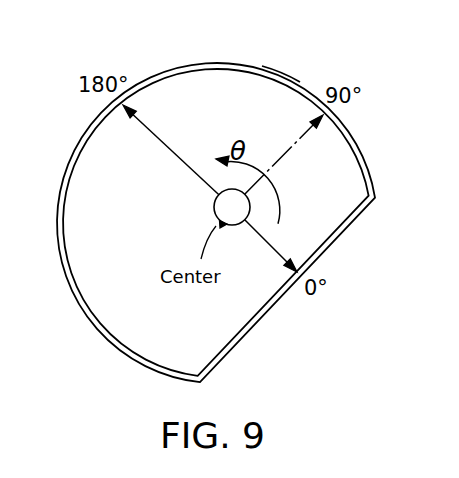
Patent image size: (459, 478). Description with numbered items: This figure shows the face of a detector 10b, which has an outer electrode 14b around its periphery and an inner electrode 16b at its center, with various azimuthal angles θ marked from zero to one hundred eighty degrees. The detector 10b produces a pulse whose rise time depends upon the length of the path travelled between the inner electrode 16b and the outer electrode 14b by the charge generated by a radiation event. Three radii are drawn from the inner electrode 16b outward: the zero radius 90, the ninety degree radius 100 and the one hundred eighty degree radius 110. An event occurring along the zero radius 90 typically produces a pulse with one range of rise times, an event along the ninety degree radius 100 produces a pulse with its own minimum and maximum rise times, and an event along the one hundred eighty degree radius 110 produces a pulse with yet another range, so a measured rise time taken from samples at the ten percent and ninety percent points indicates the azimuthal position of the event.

The detector 10b is at (222, 40).
The outer electrode 14b is at (278, 72).
The inner electrode 16b is at (214, 207).
The 180° radius 110 is at (168, 150).
The 90° radius 100 is at (292, 153).
The zero radius 90 is at (267, 243).